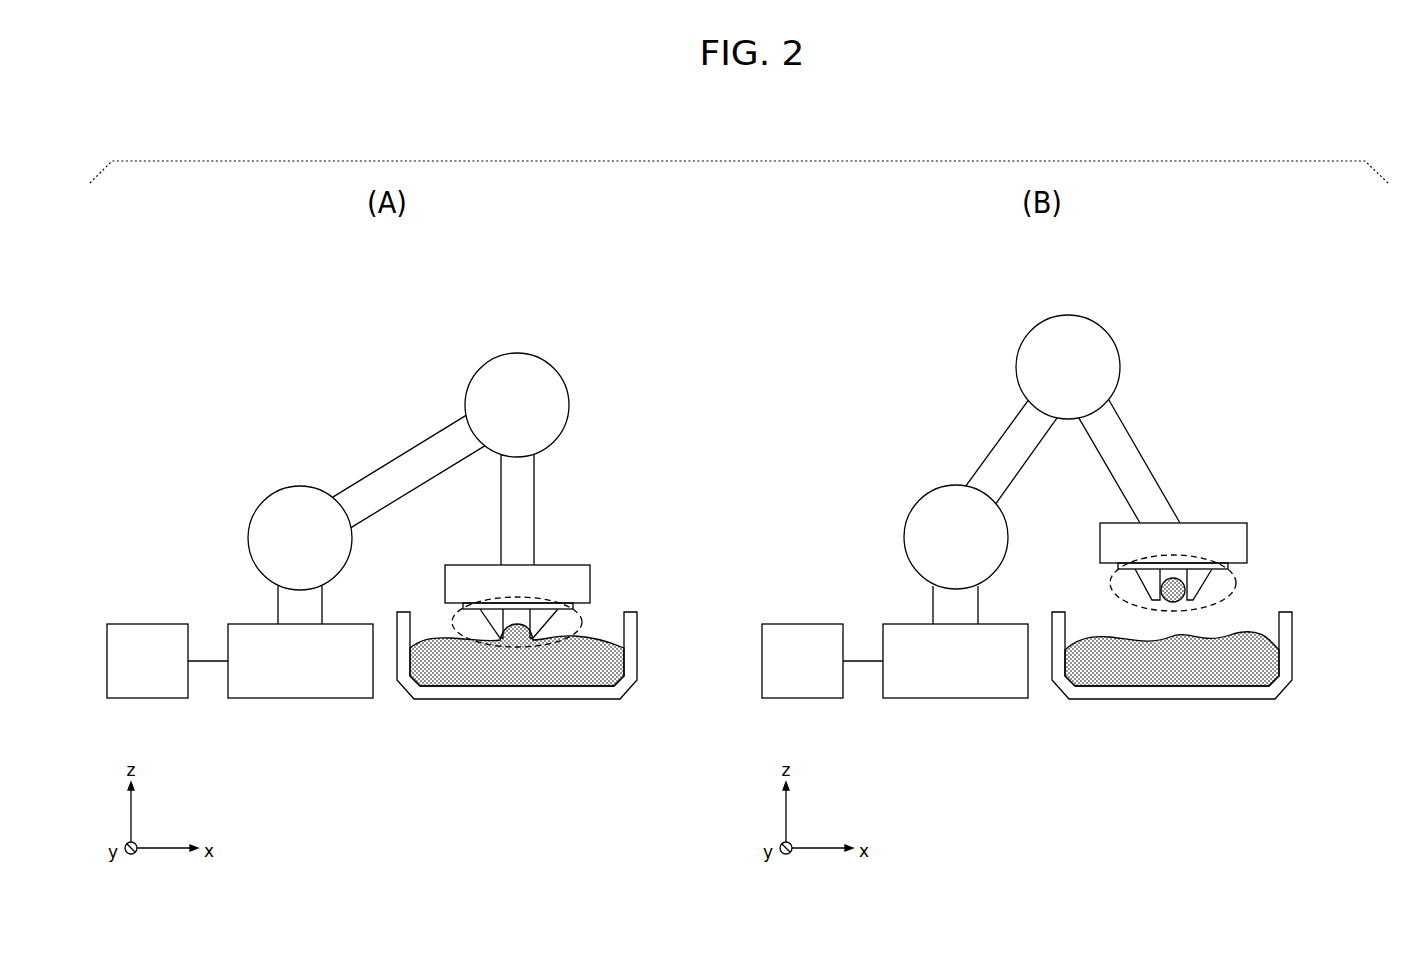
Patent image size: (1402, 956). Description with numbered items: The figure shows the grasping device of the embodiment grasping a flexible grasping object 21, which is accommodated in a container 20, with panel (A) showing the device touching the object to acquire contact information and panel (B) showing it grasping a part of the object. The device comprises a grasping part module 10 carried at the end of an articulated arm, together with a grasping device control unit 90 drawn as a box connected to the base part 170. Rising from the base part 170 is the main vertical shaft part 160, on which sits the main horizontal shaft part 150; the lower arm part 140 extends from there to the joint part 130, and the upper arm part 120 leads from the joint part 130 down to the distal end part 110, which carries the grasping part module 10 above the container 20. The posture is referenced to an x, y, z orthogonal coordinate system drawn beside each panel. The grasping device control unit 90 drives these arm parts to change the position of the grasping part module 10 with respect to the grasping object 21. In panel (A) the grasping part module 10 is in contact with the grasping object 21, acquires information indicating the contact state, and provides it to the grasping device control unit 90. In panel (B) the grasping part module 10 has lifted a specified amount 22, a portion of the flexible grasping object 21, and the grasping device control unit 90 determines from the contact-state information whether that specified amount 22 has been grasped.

The grasping part module 10 is at (582, 630).
The container 20 is at (637, 644).
The flexible grasping object 21 is at (520, 670).
The specified amount 22 is at (1175, 603).
The grasping device control unit 90 is at (138, 623).
The distal end part 110 is at (595, 565).
The upper arm part 120 is at (536, 493).
The joint part 130 is at (550, 364).
The lower arm part 140 is at (415, 447).
The main horizontal shaft part 150 is at (272, 494).
The main vertical shaft part 160 is at (278, 608).
The base part 170 is at (297, 698).